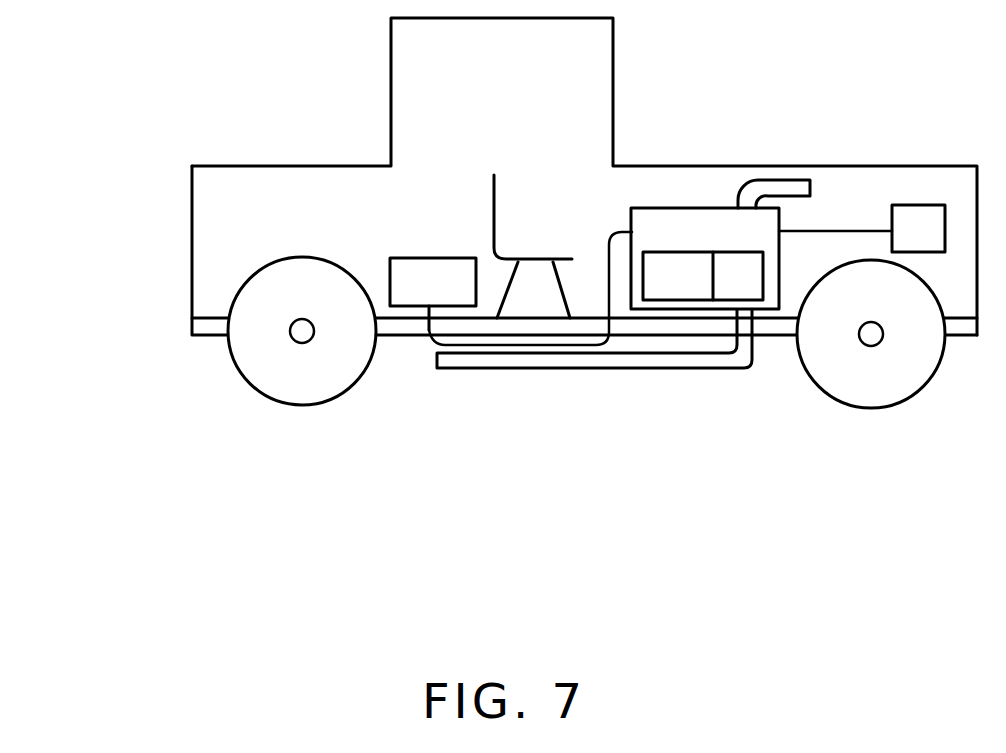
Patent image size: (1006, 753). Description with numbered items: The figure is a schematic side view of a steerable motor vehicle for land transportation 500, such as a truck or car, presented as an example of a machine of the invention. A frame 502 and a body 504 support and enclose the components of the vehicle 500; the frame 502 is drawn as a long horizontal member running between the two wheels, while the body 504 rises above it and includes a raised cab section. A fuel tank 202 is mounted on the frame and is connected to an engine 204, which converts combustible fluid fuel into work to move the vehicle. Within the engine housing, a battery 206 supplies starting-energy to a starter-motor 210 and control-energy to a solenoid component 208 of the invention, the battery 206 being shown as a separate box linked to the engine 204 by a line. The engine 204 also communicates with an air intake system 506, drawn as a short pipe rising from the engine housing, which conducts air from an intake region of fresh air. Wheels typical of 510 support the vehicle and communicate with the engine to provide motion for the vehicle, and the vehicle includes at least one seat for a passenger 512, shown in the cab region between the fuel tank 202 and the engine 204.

The steerable motor vehicle for land transportation 500 is at (388, 465).
The frame 502 is at (208, 327).
The body 504 is at (223, 166).
The air intake system 506 is at (782, 185).
The wheels 510 is at (277, 402).
The seat for a passenger 512 is at (496, 204).
The fuel tank 202 is at (400, 267).
The engine 204 is at (658, 217).
The battery 206 is at (913, 213).
The solenoid component 208 is at (727, 262).
The starter-motor 210 is at (673, 265).